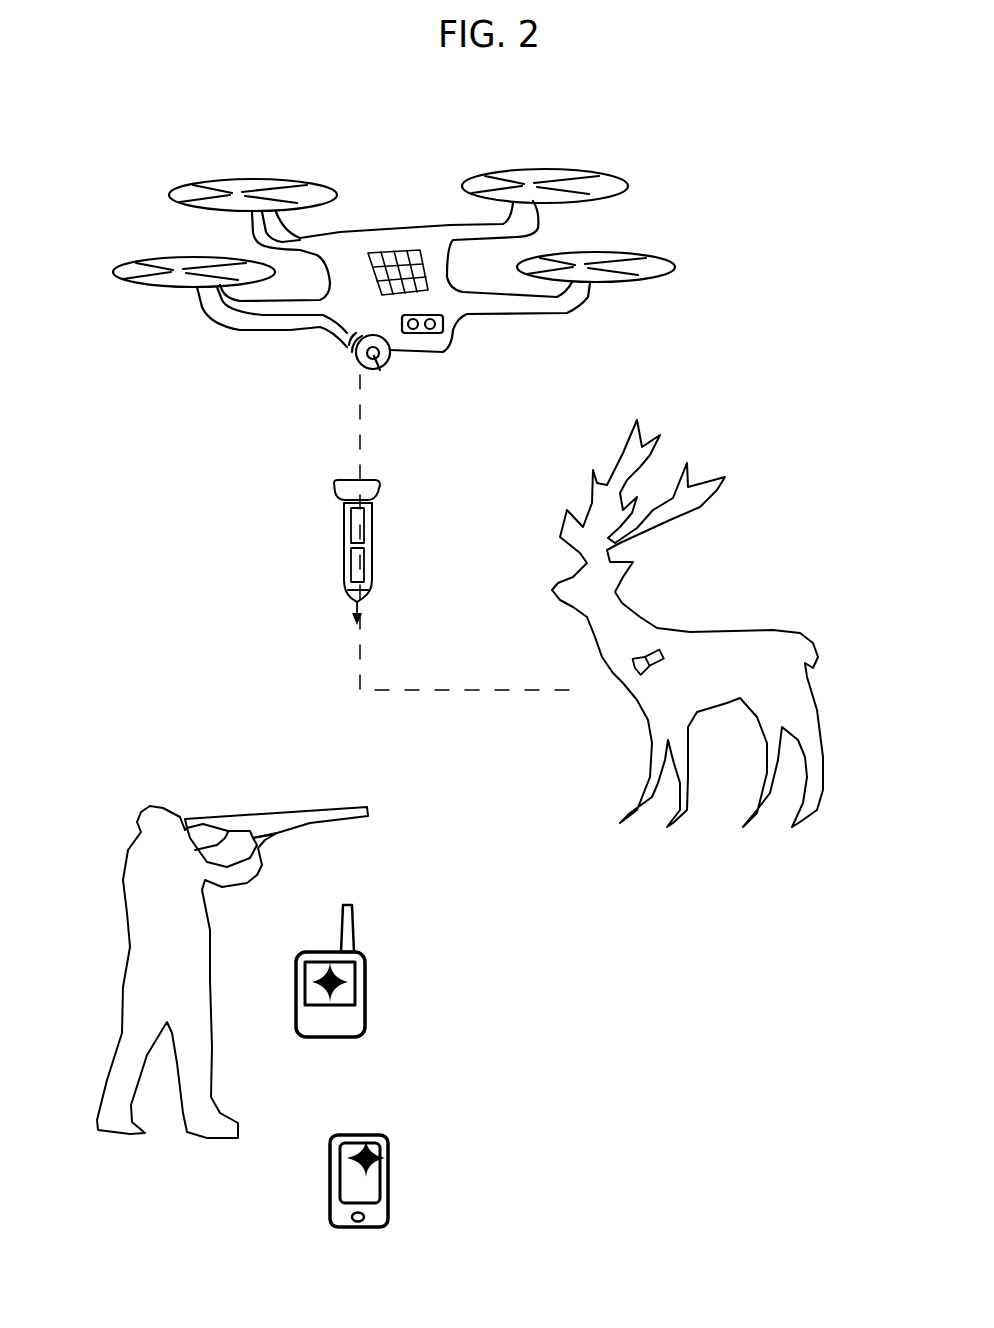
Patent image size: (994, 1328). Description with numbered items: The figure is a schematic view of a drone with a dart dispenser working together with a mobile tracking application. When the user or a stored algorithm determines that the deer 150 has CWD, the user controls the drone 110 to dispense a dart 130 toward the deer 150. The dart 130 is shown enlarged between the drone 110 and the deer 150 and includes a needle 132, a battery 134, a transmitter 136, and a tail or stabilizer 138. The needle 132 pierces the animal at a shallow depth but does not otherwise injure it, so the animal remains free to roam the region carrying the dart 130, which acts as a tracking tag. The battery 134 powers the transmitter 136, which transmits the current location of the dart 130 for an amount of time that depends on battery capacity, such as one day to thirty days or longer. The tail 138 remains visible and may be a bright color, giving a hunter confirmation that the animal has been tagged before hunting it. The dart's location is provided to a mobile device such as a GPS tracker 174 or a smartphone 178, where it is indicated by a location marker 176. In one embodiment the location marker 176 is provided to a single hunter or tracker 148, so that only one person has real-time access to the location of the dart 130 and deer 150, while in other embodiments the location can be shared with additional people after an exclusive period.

The drone 110 is at (86, 224).
The dart 130 is at (455, 551).
The needle 132 is at (347, 618).
The battery 134 is at (353, 533).
The transmitter 136 is at (353, 570).
The tail or stabilizer 138 is at (328, 483).
The hunter or tracker 148 is at (153, 900).
The deer 150 is at (786, 611).
The GPS tracker 174 is at (370, 975).
The location marker 176 is at (373, 1177).
The smartphone 178 is at (419, 1176).